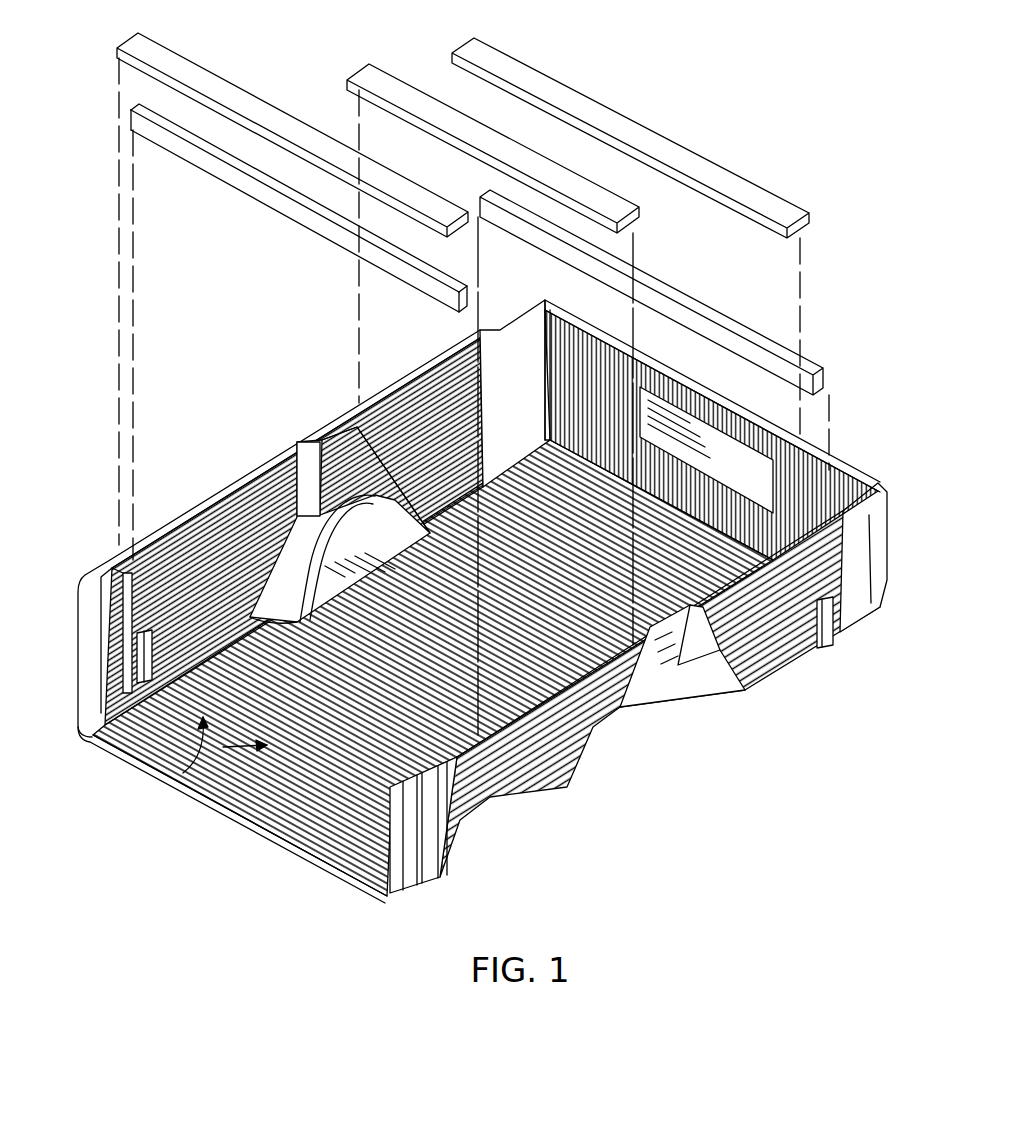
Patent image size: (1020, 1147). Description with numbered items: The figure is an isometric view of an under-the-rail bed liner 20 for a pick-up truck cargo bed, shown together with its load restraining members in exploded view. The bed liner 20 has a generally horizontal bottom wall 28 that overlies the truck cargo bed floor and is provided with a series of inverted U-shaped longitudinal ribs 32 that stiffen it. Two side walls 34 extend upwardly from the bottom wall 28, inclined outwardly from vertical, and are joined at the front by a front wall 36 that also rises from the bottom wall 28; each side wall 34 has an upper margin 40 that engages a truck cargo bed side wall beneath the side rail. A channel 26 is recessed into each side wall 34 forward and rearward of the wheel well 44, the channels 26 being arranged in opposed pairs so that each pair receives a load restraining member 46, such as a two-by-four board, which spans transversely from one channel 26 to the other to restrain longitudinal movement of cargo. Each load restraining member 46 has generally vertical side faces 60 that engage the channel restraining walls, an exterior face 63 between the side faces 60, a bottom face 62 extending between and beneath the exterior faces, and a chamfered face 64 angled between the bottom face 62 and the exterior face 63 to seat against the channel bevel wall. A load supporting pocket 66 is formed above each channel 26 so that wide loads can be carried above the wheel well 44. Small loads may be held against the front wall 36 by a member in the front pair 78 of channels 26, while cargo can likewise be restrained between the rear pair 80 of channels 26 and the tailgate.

The bed liner 20 is at (471, 601).
The load-restraining channel 26 is at (140, 650).
The bottom wall 28 is at (283, 847).
The longitudinal ribs 32 is at (227, 800).
The side wall 34 is at (193, 507).
The front wall 36 is at (731, 430).
The upper margin 40 is at (270, 457).
The wheel well 44 is at (497, 566).
The load restraining member 46 is at (432, 249).
The side face 60 is at (212, 176).
The bottom face 62 is at (329, 246).
The exterior face 63 is at (469, 296).
The chamfered face 64 is at (130, 128).
The load supporting pocket 66 is at (140, 612).
The front pair of channels 78 is at (756, 493).
The rear pair of channels 80 is at (183, 773).